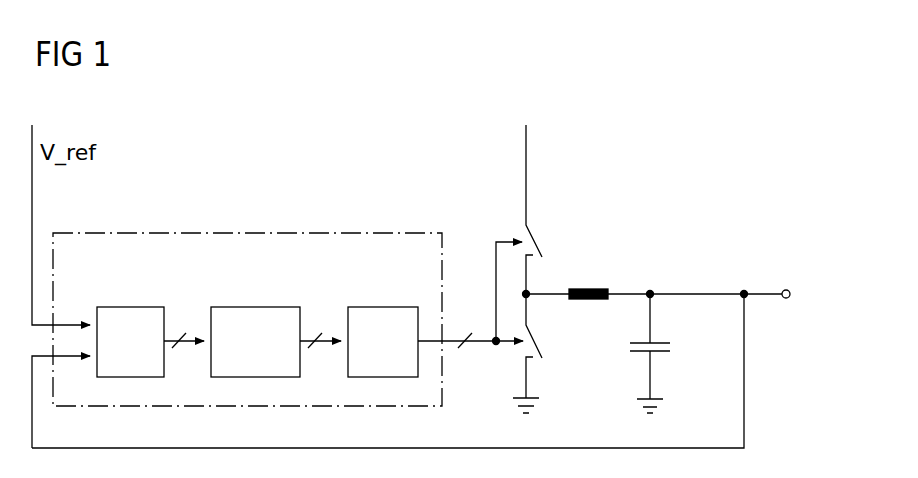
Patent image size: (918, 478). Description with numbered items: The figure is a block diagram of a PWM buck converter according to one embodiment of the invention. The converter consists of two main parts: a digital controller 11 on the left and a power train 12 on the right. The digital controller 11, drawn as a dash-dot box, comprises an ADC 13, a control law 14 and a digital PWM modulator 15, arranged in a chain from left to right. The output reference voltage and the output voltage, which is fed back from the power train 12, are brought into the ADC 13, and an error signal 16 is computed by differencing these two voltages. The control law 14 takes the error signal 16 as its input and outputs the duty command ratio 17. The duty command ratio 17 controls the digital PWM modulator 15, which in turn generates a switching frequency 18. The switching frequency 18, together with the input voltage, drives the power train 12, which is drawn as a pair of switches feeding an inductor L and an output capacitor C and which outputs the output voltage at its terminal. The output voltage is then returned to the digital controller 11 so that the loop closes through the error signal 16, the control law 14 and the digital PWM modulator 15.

The digital controller 11 is at (258, 232).
The power train 12 is at (666, 269).
The ADC 13 is at (130, 306).
The control law 14 is at (258, 306).
The digital PWM modulator 15 is at (383, 306).
The error signal 16 is at (175, 340).
The duty command ratio 17 is at (311, 340).
The switching frequency 18 is at (463, 340).
The inductor L is at (589, 290).
The output capacitor C is at (672, 347).